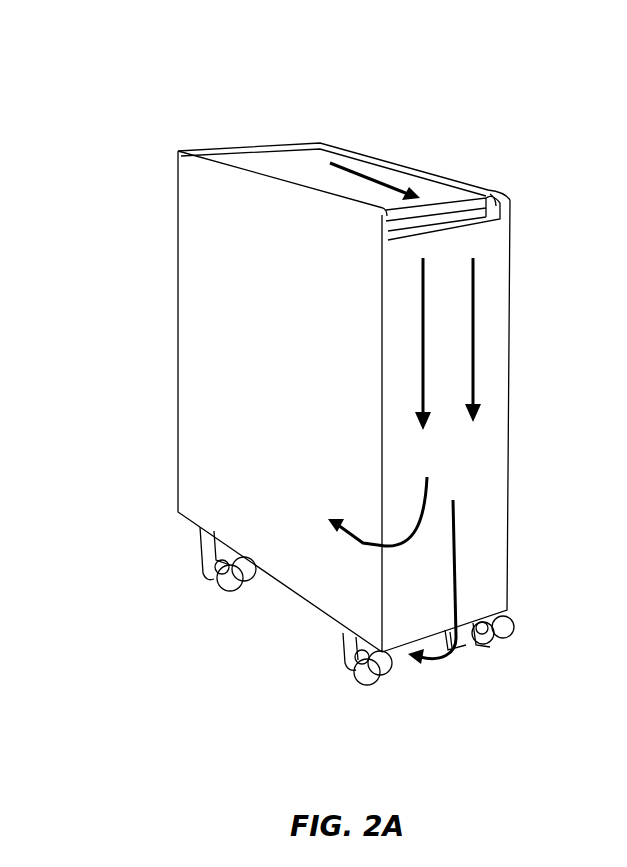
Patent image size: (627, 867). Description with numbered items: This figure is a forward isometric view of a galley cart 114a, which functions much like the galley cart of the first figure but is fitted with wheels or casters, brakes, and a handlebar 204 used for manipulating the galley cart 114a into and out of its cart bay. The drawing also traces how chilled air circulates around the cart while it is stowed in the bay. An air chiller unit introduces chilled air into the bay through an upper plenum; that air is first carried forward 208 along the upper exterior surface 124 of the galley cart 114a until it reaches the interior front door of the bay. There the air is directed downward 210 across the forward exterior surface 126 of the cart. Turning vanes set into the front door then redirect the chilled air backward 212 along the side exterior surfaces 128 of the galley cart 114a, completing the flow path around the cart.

The galley cart 114a is at (145, 87).
The upper exterior surface 124 is at (252, 163).
The forward exterior surface 126 is at (483, 483).
The side exterior surfaces 128 is at (243, 329).
The handlebar 204 is at (490, 190).
The forward airflow 208 is at (393, 182).
The downward airflow 210 is at (477, 350).
The backward airflow 212 is at (365, 548).